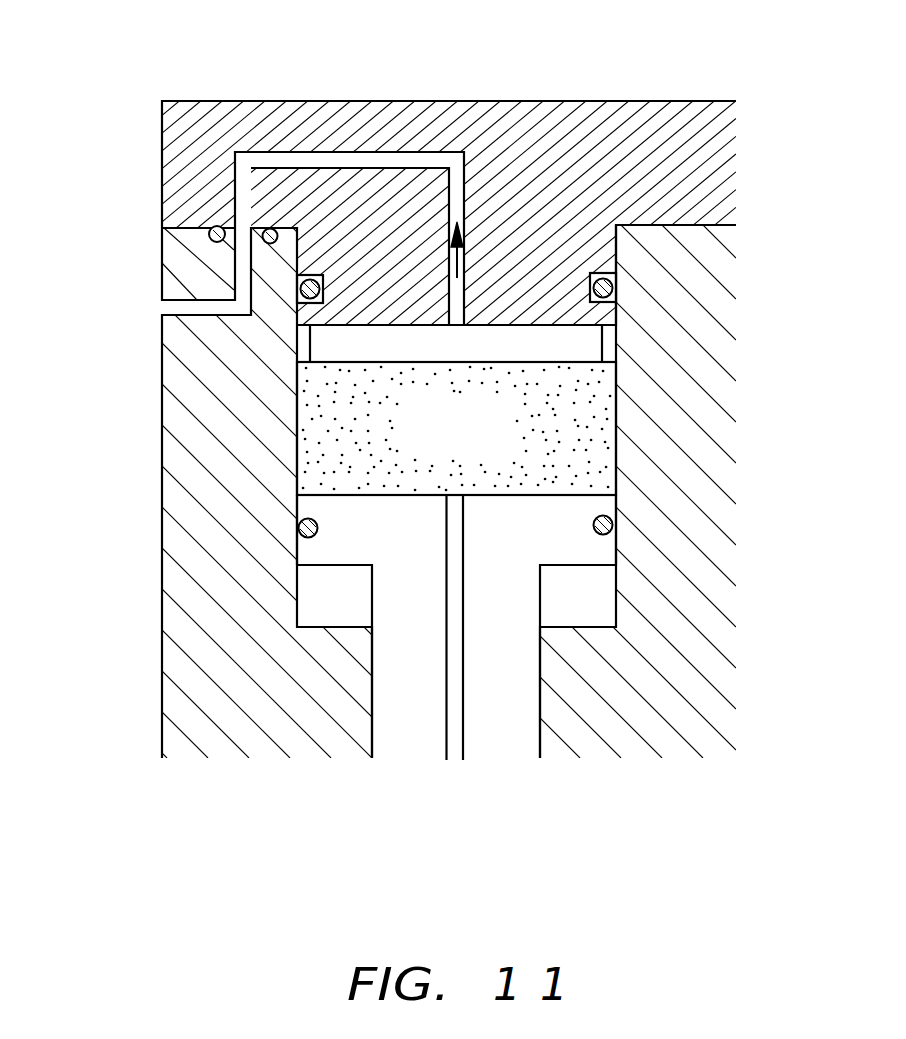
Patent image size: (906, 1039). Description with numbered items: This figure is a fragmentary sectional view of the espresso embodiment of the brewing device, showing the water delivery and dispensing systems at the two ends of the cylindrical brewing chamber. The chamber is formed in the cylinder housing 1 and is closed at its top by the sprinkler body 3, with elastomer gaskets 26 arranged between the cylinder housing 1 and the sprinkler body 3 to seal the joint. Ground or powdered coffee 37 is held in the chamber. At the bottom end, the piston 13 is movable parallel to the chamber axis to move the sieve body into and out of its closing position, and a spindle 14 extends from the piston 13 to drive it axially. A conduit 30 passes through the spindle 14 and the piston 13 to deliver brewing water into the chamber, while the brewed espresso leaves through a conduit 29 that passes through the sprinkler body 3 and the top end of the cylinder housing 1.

The cylinder housing 1 is at (197, 440).
The sprinkler body 3 is at (638, 143).
The piston 13 is at (542, 525).
The spindle 14 is at (505, 732).
The elastomer gaskets 26 is at (217, 227).
The conduit 29 is at (162, 308).
The conduit 30 is at (455, 771).
The ground or powdered coffee 37 is at (527, 422).